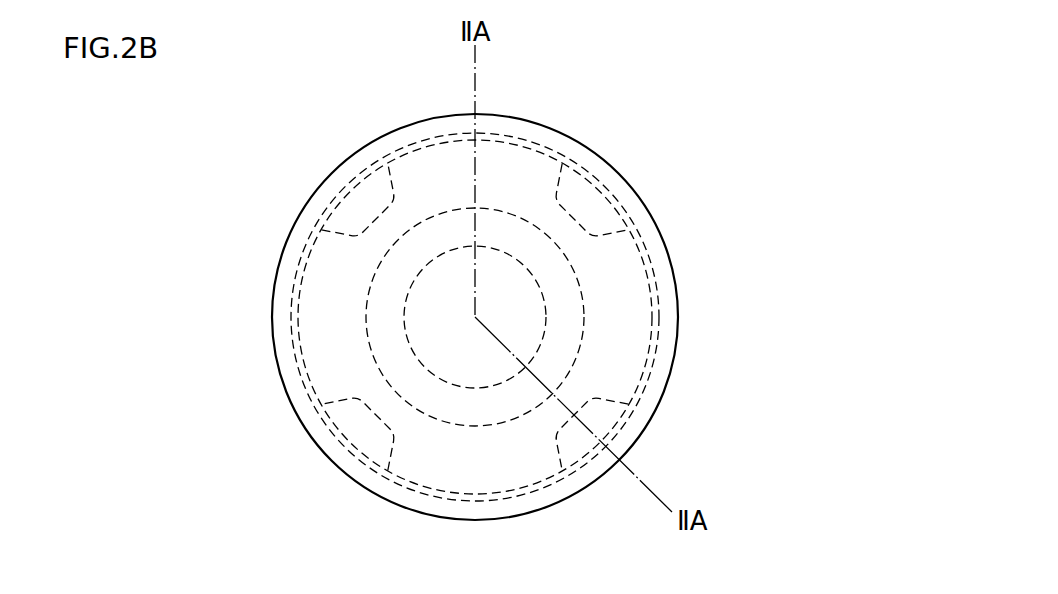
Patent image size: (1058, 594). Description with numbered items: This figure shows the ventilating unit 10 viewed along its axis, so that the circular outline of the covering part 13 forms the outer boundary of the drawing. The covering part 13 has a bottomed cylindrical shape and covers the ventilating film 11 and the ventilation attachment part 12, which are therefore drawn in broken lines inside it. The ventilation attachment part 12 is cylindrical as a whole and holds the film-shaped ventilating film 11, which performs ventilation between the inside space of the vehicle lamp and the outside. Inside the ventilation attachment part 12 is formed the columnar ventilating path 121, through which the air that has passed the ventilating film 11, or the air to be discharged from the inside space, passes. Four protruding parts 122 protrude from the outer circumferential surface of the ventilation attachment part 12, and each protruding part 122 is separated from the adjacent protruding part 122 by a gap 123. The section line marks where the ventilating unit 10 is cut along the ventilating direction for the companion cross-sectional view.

The ventilating unit 10 is at (752, 106).
The ventilating film 11 is at (402, 393).
The ventilation attachment part 12 is at (302, 247).
The covering part 13 is at (360, 163).
The ventilating path 121 is at (485, 360).
The protruding part 122 is at (515, 160).
The gap 123 is at (593, 208).